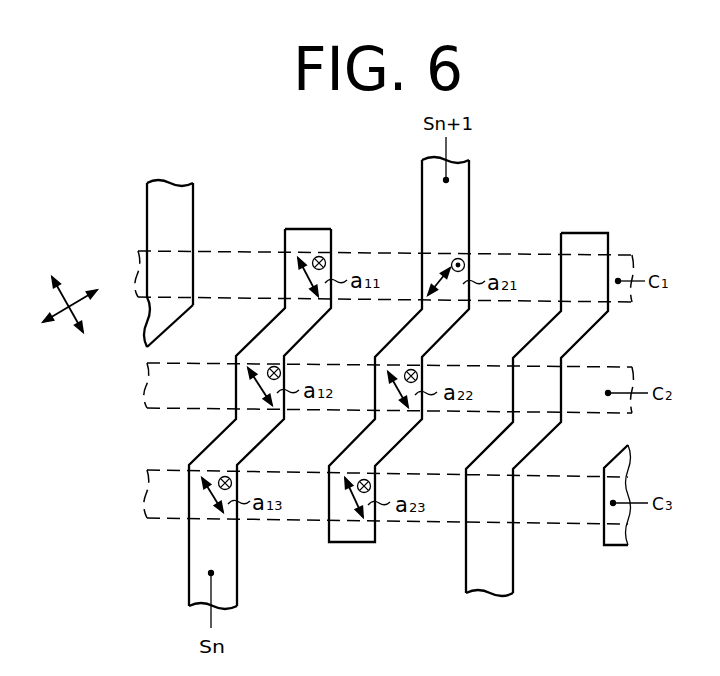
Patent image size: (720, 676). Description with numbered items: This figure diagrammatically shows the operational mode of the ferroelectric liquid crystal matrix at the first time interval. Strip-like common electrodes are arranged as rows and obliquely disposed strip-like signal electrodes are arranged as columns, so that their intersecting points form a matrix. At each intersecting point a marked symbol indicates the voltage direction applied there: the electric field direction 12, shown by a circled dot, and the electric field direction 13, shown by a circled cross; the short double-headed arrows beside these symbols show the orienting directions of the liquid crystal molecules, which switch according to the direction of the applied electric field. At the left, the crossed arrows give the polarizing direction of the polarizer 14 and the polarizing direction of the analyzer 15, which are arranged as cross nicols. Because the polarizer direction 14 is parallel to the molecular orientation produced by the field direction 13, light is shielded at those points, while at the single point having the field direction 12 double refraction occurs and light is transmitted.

The electric field direction 12 is at (462, 259).
The electric field direction 13 is at (324, 258).
The polarizing direction of the polarizer 14 is at (62, 292).
The polarizing direction of the analyzer 15 is at (78, 304).